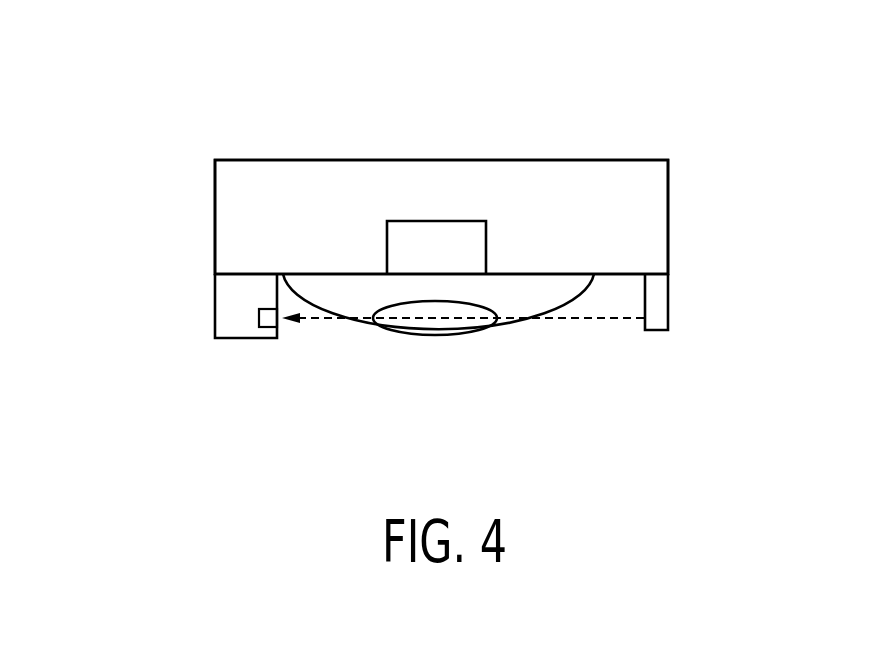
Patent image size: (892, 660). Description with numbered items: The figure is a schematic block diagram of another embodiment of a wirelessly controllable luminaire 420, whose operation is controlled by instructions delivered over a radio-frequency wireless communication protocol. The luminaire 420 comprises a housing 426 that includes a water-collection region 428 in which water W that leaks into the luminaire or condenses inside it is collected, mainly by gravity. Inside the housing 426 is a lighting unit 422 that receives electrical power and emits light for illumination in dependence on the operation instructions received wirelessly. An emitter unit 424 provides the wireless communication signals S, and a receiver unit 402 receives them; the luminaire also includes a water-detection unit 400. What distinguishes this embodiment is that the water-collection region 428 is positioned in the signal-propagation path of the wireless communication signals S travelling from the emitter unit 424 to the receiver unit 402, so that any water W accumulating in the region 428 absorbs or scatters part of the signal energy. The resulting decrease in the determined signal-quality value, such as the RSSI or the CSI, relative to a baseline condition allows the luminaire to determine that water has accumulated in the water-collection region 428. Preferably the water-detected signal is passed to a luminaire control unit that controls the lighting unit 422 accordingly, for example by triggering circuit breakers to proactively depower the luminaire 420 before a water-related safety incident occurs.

The wirelessly controllable luminaire 420 is at (149, 95).
The housing 426 is at (215, 206).
The lighting unit 422 is at (450, 221).
The water-detection unit 400 is at (215, 305).
The emitter unit 424 is at (670, 303).
The receiver unit 402 is at (270, 328).
The water-collection region 428 is at (578, 297).
The wireless communication signals S is at (314, 333).
The water W is at (447, 328).